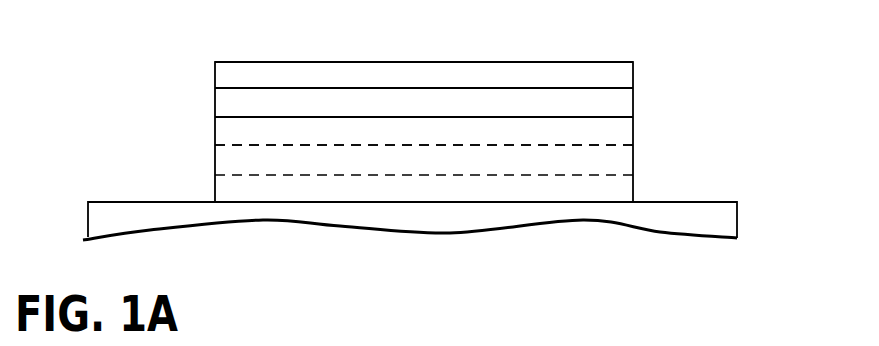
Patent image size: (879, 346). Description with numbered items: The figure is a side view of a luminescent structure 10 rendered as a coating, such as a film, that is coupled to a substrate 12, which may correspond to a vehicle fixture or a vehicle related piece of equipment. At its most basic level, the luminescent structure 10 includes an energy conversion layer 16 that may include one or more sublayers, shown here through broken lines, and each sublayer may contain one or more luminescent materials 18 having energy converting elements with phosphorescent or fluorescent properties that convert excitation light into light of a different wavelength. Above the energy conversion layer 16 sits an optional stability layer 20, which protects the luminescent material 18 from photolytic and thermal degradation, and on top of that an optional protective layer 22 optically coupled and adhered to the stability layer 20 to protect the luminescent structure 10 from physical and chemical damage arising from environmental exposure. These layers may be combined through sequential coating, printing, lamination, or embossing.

The luminescent structure 10 is at (568, 36).
The substrate 12 is at (678, 202).
The energy conversion layer 16 is at (215, 158).
The luminescent material 18 is at (587, 162).
The stability layer 20 is at (215, 104).
The protective layer 22 is at (308, 62).